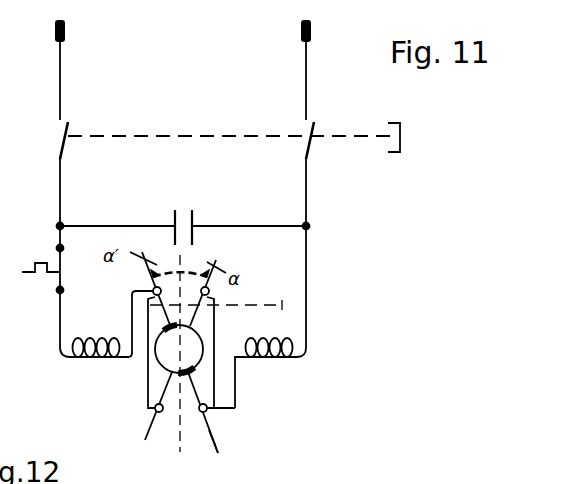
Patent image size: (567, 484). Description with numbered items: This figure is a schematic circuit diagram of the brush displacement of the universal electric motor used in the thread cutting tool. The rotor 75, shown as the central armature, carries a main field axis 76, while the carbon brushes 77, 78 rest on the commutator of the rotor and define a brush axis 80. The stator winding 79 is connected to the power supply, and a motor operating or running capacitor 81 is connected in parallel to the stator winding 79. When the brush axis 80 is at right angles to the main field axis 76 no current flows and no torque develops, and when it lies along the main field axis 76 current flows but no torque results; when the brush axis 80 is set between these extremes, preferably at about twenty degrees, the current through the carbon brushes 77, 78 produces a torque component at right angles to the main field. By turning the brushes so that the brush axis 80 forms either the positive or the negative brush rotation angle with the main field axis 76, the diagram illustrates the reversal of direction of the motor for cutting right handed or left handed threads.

The rotor 75 is at (173, 352).
The main field axis 76 is at (182, 440).
The carbon brush 77 is at (198, 370).
The carbon brush 78 is at (162, 323).
The stator winding 79 is at (83, 358).
The brush axis 80 is at (213, 438).
The motor operating capacitor 81 is at (192, 215).